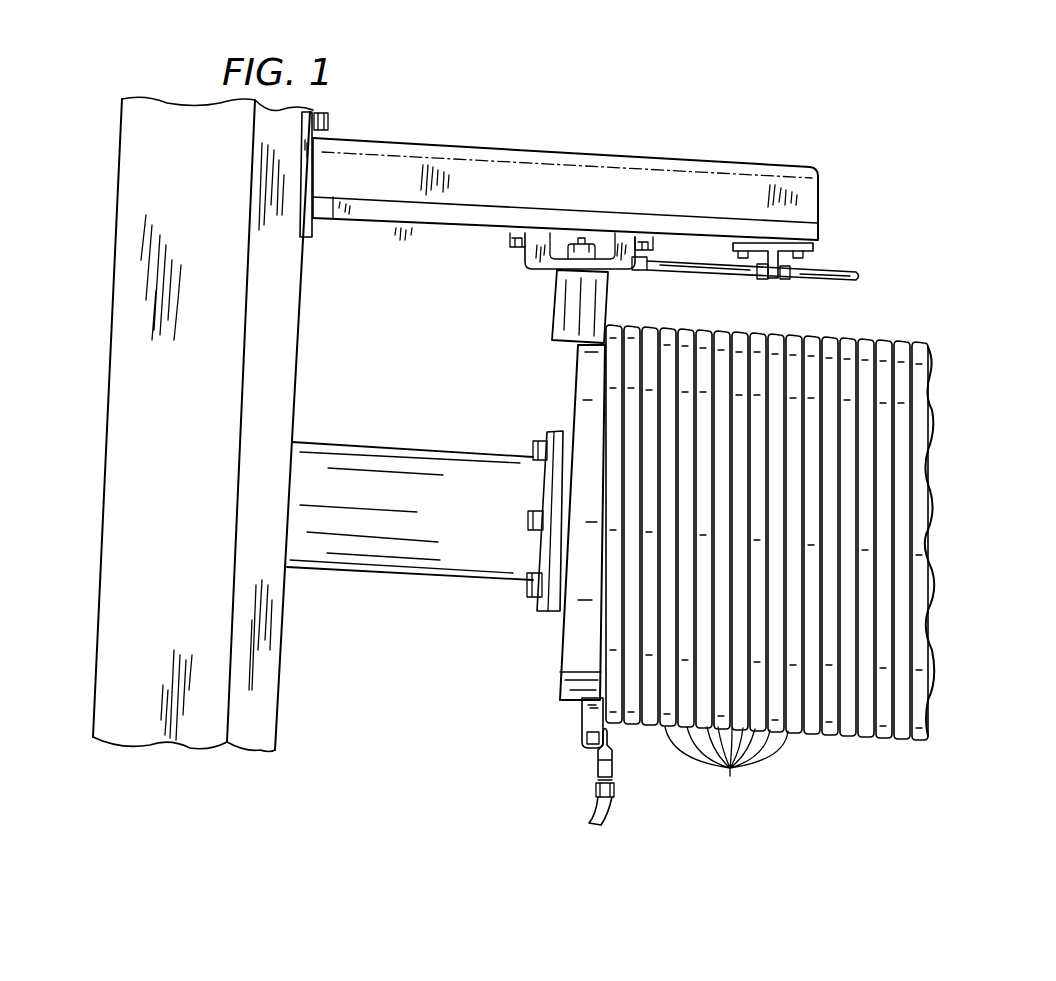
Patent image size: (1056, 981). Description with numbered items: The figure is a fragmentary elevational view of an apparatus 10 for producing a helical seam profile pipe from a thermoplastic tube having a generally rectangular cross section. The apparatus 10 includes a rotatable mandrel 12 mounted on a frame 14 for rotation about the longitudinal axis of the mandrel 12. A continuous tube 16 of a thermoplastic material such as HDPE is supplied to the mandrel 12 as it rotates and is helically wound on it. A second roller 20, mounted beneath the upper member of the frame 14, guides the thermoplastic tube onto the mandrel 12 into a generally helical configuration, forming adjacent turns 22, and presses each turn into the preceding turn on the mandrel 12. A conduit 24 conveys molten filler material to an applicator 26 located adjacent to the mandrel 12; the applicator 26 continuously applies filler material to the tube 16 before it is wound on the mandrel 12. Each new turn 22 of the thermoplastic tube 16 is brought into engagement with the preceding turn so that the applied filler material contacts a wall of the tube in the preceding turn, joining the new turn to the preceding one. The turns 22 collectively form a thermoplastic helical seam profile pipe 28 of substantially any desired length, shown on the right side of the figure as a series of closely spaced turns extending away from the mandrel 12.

The apparatus 10 is at (737, 152).
The rotatable mandrel 12 is at (578, 383).
The frame 14 is at (300, 297).
The continuous tube 16 is at (583, 740).
The second roller 20 is at (551, 300).
The turns 22 is at (726, 768).
The conduit 24 is at (607, 817).
The applicator 26 is at (607, 735).
The helical seam profile pipe 28 is at (932, 366).